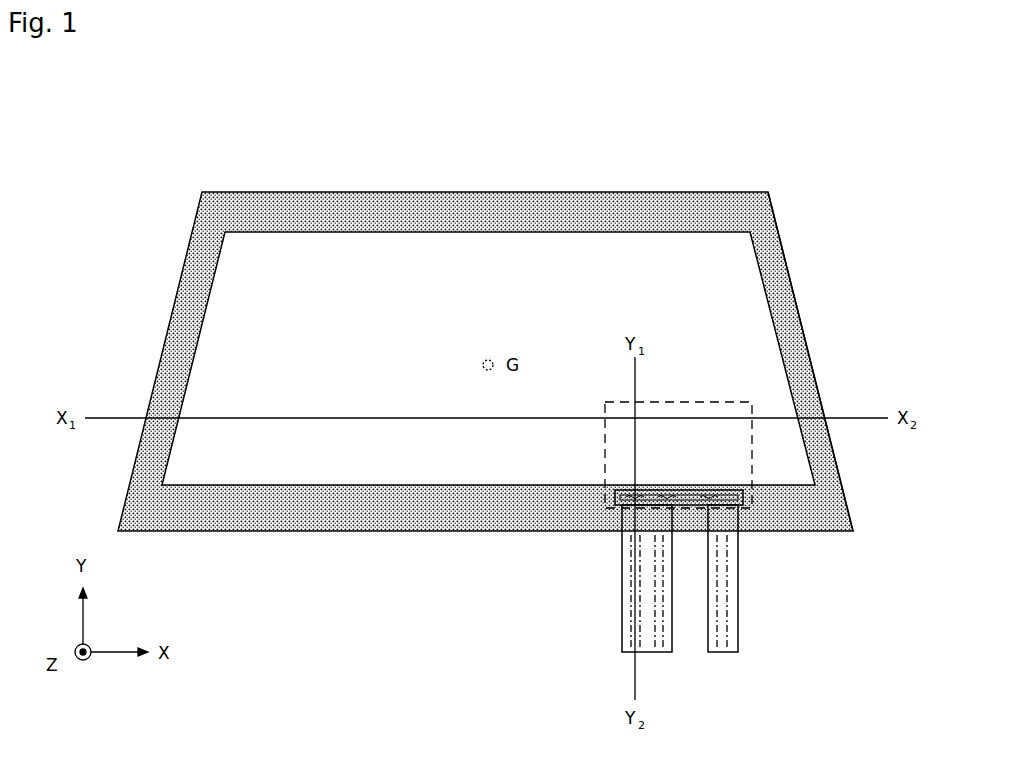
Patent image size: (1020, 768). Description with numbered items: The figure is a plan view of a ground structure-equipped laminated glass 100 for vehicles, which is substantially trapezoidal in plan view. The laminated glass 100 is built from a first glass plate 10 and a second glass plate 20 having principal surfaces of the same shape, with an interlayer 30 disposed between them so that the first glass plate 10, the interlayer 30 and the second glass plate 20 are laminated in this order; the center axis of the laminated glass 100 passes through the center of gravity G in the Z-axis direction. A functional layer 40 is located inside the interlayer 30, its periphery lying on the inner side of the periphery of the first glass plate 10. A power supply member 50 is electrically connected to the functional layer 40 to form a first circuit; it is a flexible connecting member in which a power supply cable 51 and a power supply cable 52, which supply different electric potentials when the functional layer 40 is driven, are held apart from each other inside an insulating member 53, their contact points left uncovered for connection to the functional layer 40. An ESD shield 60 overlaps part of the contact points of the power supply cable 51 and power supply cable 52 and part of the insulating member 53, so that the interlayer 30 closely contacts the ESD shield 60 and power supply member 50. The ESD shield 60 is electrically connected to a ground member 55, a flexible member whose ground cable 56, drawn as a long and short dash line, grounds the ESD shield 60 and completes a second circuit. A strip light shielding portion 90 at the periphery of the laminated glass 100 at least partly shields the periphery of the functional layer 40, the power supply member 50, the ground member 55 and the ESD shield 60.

The laminated glass 100 is at (754, 178).
The light shielding portion 90 is at (495, 201).
The first glass plate 10 is at (795, 296).
The second glass plate 20 is at (505, 361).
The interlayer 30 is at (826, 410).
The functional layer 40 is at (623, 473).
The ESD shield 60 is at (690, 488).
The power supply member 50 is at (510, 610).
The power supply cable 51 is at (636, 572).
The power supply cable 52 is at (656, 607).
The insulating member 53 is at (626, 543).
The ground member 55 is at (738, 558).
The ground cable 56 is at (722, 592).